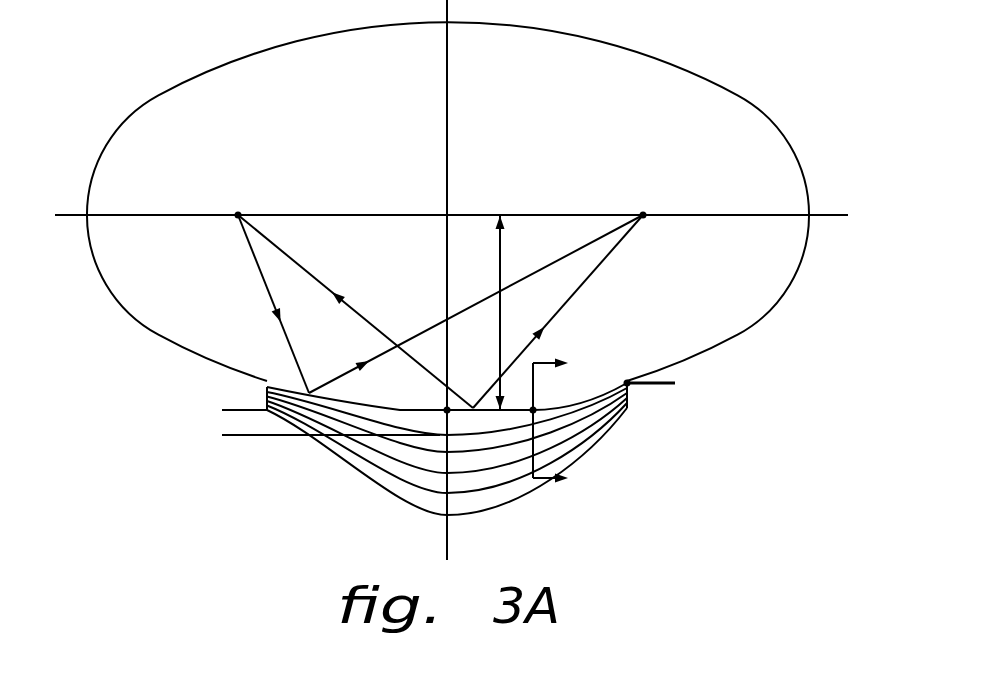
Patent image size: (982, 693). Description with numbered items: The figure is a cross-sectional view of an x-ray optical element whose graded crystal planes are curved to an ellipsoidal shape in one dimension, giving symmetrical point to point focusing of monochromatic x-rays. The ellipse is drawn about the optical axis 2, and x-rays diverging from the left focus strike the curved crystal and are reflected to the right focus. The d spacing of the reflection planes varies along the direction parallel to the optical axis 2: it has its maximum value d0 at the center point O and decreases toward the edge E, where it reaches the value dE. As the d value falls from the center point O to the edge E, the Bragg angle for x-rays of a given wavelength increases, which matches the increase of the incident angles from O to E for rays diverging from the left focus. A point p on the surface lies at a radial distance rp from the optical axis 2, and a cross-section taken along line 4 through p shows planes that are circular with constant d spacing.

The optical axis 2 is at (453, 219).
The section line 4 is at (559, 423).
The center point O is at (439, 400).
The point p is at (541, 394).
The edge E is at (624, 372).
The maximum d spacing d0 is at (238, 383).
The edge d spacing dE is at (651, 355).
The radial distance rp is at (491, 312).